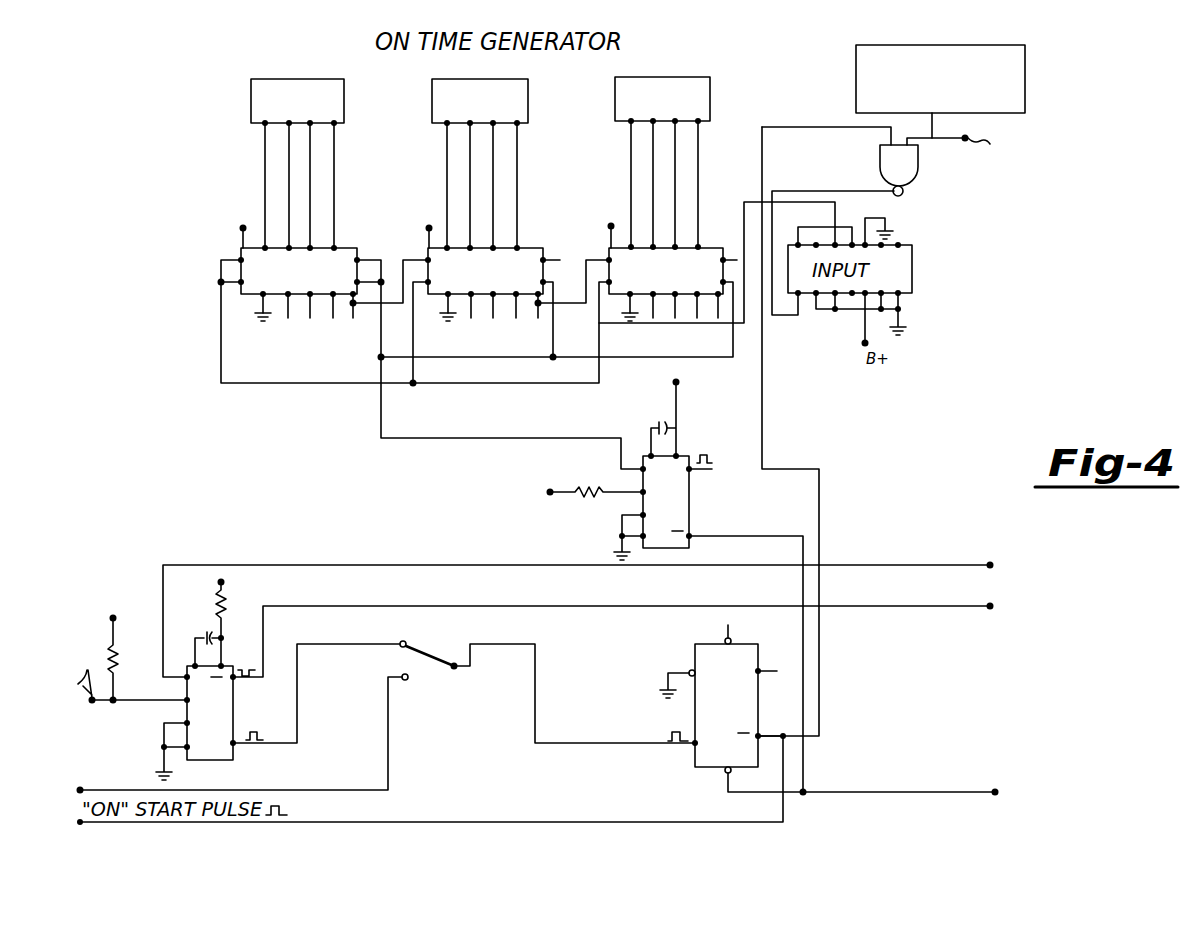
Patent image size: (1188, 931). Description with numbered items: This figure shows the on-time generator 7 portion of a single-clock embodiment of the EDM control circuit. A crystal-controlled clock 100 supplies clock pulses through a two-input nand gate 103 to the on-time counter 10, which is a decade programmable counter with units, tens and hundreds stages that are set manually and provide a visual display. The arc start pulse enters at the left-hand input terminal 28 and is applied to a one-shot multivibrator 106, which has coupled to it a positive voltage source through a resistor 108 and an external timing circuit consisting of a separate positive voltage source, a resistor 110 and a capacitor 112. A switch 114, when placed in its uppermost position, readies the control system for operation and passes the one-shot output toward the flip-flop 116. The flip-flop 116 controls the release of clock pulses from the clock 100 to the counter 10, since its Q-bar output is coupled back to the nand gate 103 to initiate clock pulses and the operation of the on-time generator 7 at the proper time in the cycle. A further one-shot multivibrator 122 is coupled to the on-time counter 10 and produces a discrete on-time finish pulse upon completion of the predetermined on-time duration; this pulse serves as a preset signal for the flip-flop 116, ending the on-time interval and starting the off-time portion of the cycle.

The on-time generator 7 is at (322, 428).
The on-time counter 10 is at (535, 402).
The input terminal 28 is at (92, 705).
The clock 100 is at (1010, 108).
The nand gate 103 is at (918, 172).
The one-shot multivibrator 106 is at (233, 712).
The resistor 108 is at (103, 656).
The resistor 110 is at (228, 606).
The capacitor 112 is at (205, 634).
The switch 114 is at (420, 648).
The flip-flop 116 is at (758, 698).
The one-shot multivibrator 122 is at (690, 501).